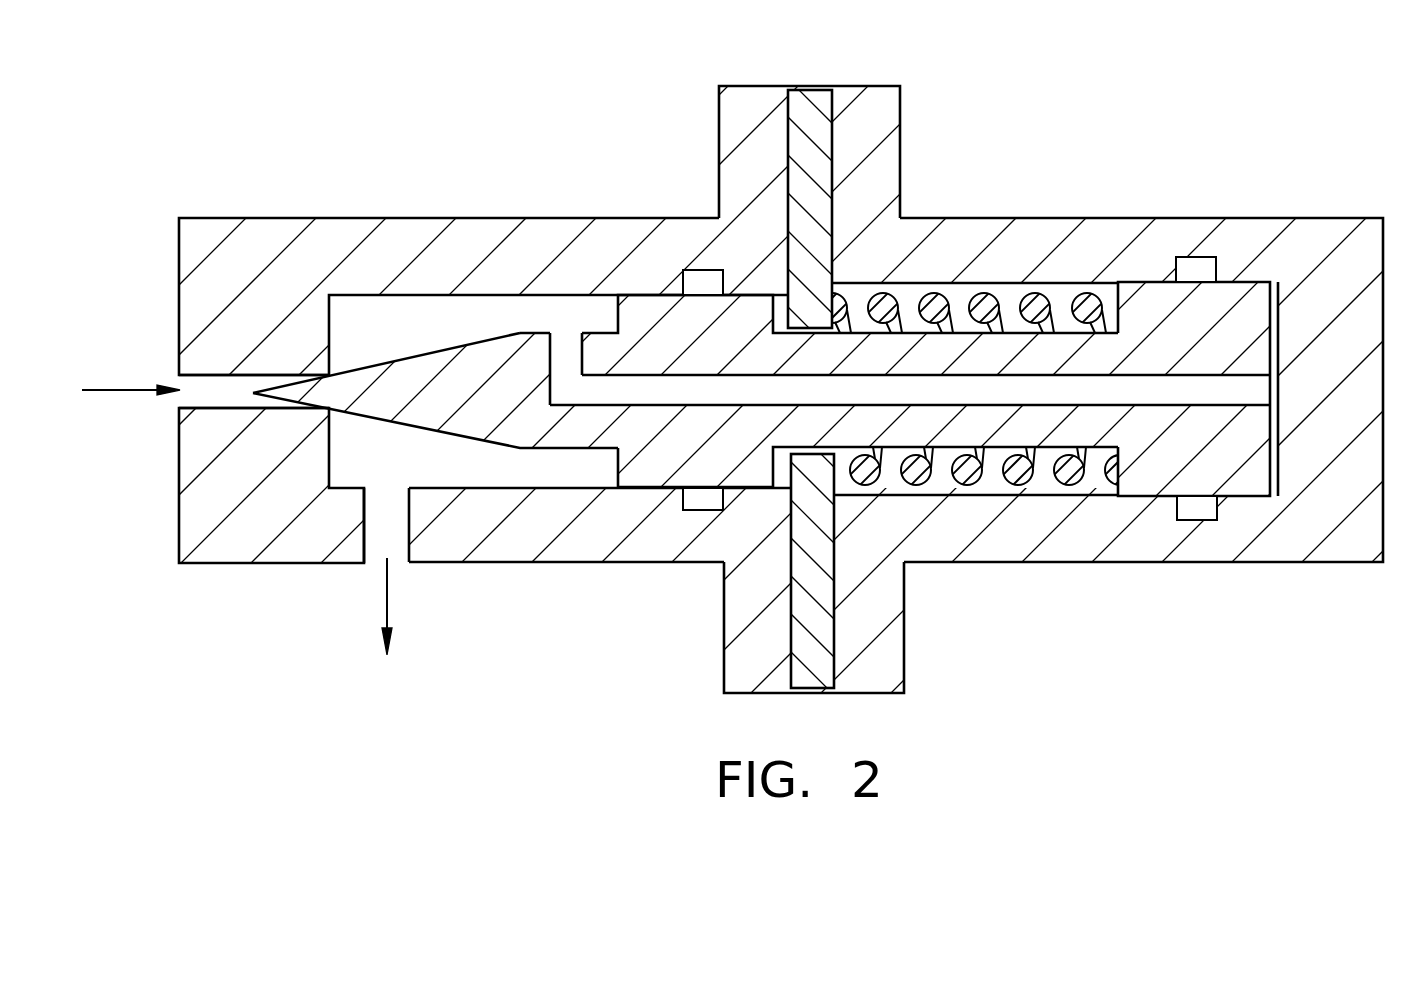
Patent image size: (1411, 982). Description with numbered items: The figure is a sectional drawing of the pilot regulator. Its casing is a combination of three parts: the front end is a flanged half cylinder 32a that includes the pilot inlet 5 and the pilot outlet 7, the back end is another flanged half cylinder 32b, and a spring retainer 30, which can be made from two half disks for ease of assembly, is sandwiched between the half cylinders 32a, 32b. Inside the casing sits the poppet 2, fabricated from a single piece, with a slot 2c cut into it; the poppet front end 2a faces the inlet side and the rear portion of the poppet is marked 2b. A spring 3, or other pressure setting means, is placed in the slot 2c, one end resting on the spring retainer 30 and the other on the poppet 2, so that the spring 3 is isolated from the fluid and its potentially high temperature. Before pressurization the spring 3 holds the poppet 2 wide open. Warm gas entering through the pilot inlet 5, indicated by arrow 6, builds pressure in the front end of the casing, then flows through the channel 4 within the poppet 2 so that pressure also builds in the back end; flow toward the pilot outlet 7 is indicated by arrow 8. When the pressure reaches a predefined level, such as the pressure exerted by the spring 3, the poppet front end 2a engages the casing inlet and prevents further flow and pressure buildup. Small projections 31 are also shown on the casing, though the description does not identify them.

The poppet 2 is at (668, 356).
The poppet front end 2a is at (477, 387).
The rear portion of valve body 2b is at (1187, 347).
The slot 2c is at (987, 486).
The spring 3 is at (1027, 483).
The channel 4 is at (567, 355).
The pilot inlet 5 is at (188, 398).
The inflow direction 6 is at (135, 390).
The pilot outlet 7 is at (378, 550).
The outflow direction 8 is at (387, 598).
The spring retainer 30 is at (813, 92).
The projection 31 is at (1190, 508).
The half cylinder 32a is at (272, 242).
The half cylinder 32b is at (1330, 262).